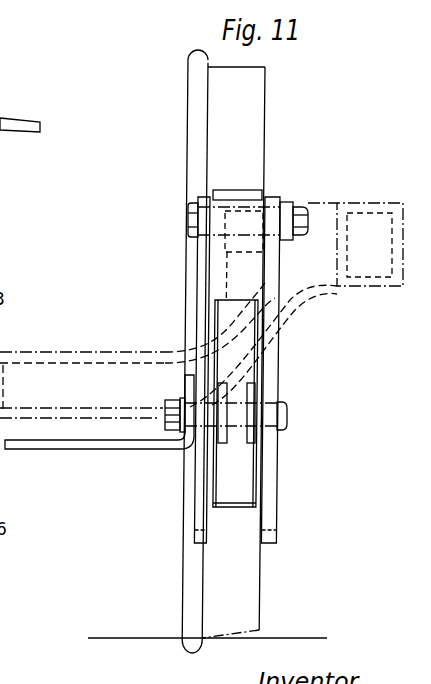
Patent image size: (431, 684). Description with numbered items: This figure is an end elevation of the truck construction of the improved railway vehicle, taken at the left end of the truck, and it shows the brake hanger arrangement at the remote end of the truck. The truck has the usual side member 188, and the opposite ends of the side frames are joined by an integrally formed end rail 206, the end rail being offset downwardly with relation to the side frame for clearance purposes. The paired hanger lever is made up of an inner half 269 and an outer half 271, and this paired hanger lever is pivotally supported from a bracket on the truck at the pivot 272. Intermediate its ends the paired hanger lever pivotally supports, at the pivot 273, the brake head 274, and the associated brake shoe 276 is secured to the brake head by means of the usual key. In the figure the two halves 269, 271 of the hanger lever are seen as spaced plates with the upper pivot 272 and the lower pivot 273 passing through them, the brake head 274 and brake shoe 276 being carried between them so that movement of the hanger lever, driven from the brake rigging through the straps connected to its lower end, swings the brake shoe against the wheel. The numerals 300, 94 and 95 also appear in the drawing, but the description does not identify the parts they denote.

The side member 188 is at (396, 203).
The end rail 206 is at (81, 351).
The inner half of paired hanger lever 269 is at (200, 487).
The outer half of paired hanger lever 271 is at (272, 463).
The pivotal support of hanger lever 272 is at (188, 218).
The pivotal connection of brake head 273 is at (262, 414).
The brake head 274 is at (250, 386).
The brake shoe 276 is at (258, 508).
The member 300 is at (20, 139).
The member 94 is at (8, 170).
The member 95 is at (8, 474).